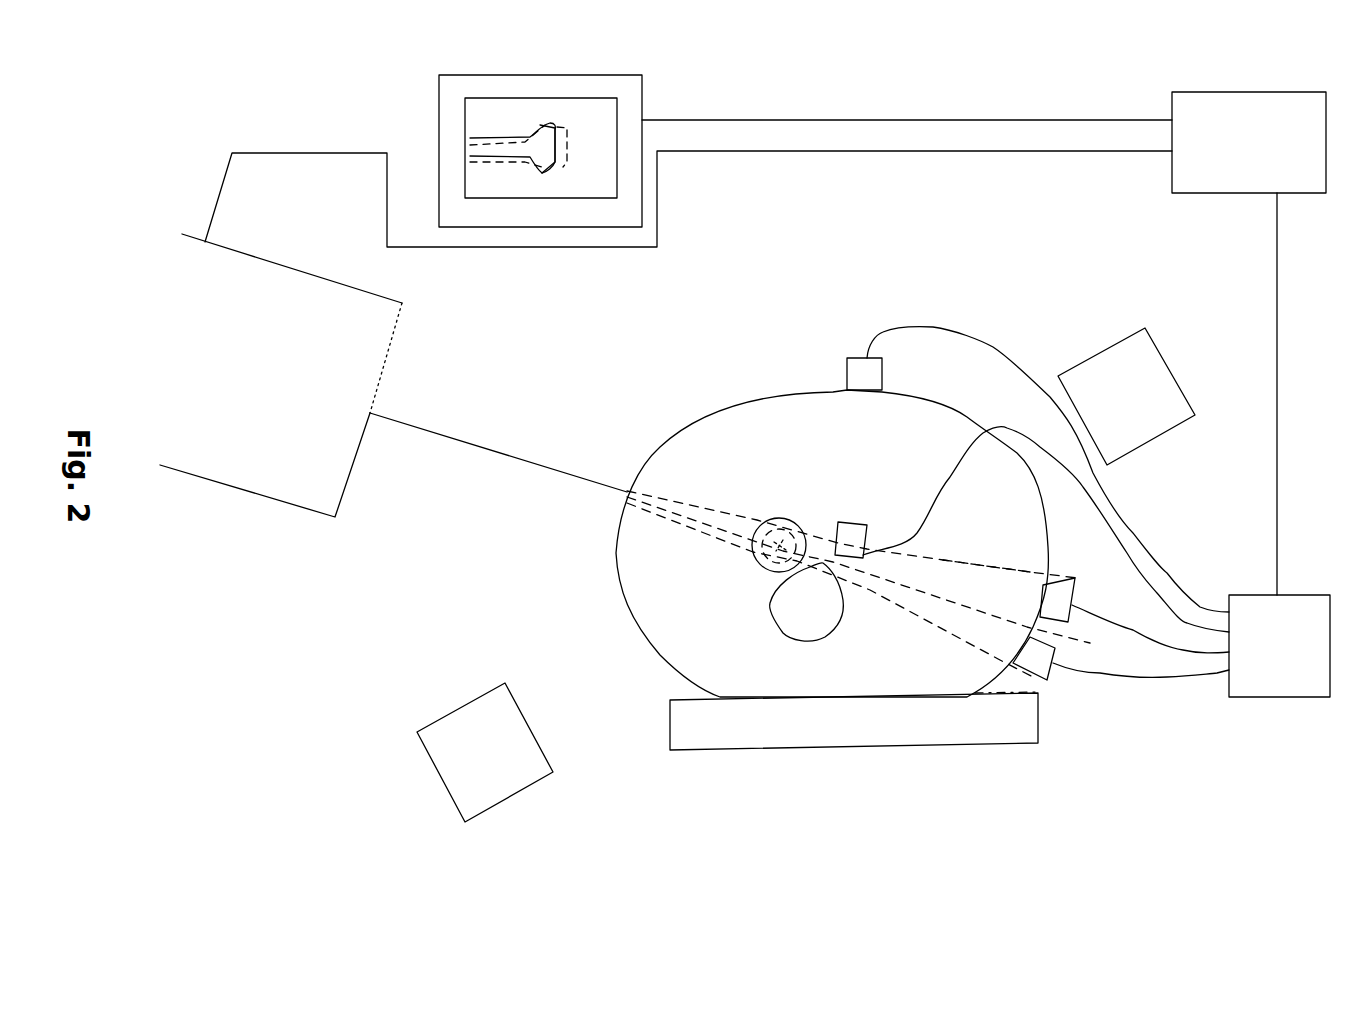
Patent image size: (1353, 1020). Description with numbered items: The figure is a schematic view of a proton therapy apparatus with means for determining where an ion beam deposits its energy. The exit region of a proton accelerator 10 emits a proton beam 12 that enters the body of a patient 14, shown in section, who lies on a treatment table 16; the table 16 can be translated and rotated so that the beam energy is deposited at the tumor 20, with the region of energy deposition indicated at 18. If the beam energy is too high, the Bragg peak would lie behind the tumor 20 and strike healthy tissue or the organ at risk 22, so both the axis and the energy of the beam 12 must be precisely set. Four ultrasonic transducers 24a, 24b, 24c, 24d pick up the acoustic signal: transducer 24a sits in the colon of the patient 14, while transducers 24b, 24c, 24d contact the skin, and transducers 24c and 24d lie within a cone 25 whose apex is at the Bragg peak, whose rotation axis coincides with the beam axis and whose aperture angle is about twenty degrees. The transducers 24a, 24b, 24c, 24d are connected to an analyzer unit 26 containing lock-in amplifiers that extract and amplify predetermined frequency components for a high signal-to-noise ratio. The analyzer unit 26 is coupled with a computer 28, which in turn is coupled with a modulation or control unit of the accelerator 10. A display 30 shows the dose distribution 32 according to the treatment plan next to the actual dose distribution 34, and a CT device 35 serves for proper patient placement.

The proton accelerator 10 is at (400, 339).
The proton beam 12 is at (520, 460).
The patient 14 is at (722, 410).
The treatment table 16 is at (1010, 732).
The energy deposition region 18 is at (728, 512).
The tumor 20 is at (795, 518).
The organ at risk 22 is at (825, 622).
The ultrasonic transducer 24a is at (852, 528).
The ultrasonic transducer 24b is at (882, 372).
The ultrasonic transducer 24c is at (1075, 580).
The ultrasonic transducer 24d is at (1040, 663).
The cone 25 is at (948, 560).
The analyzer unit 26 is at (1300, 605).
The computer 28 is at (1220, 185).
The display 30 is at (642, 98).
The dose distribution according to treatment plan 32 is at (500, 137).
The actual dose distribution 34 is at (567, 163).
The CT device 35 is at (1167, 382).